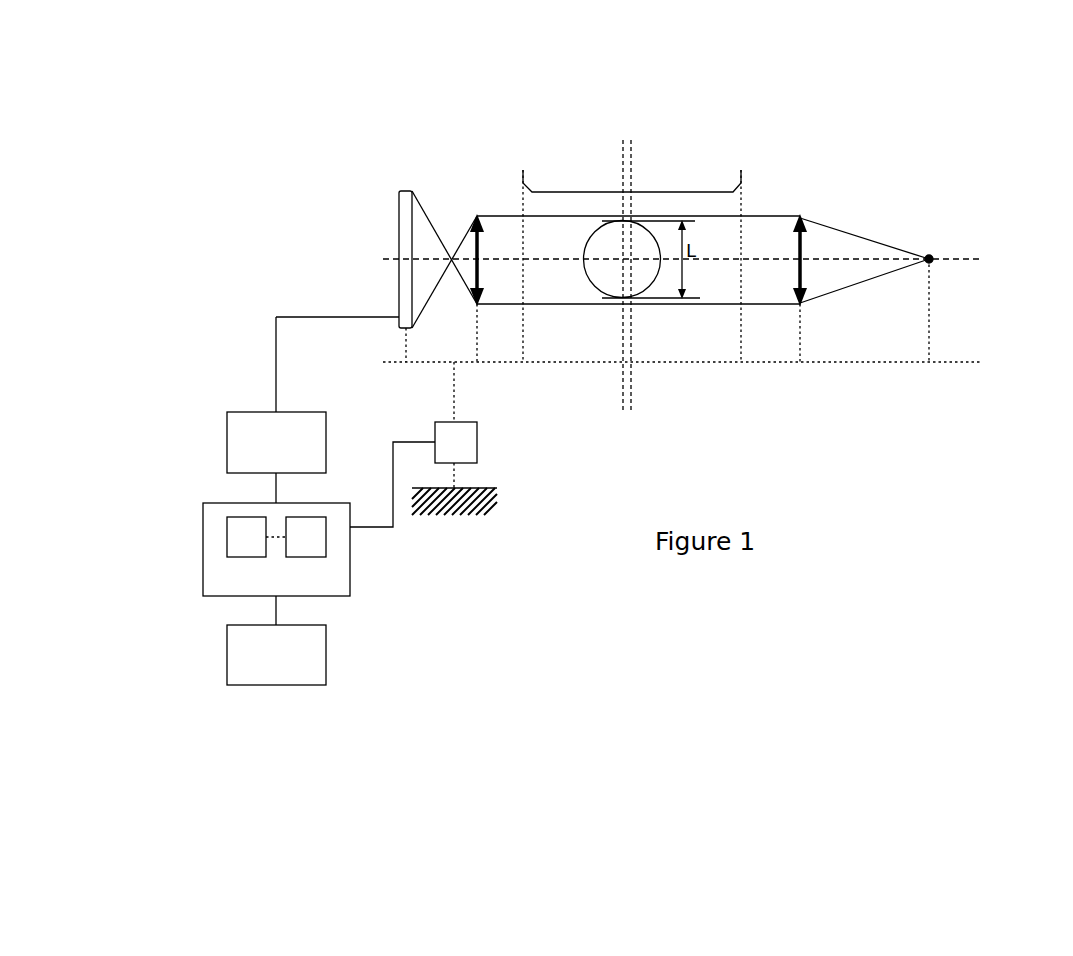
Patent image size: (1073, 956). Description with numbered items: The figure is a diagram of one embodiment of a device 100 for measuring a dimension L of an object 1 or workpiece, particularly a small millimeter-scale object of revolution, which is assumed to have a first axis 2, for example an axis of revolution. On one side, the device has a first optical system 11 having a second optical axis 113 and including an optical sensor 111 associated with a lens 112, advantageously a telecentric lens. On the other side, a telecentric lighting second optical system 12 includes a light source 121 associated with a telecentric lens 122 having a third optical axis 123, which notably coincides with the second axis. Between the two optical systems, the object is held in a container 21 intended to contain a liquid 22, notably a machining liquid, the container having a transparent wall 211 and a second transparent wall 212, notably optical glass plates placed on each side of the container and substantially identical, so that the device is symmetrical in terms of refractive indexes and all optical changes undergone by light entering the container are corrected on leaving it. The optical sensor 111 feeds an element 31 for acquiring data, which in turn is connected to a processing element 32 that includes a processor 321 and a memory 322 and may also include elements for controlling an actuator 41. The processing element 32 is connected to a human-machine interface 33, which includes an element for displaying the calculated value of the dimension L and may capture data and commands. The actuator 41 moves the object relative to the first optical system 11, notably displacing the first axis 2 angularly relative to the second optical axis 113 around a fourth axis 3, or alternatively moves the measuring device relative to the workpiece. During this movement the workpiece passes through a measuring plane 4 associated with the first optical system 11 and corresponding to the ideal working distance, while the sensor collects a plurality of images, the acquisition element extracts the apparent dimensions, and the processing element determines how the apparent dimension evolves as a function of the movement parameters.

The device 100 is at (818, 143).
The first optical system 11 is at (645, 225).
The optical sensor 111 is at (402, 206).
The lens 112 is at (475, 211).
The second optical axis 113 is at (390, 260).
The object 1 is at (646, 226).
The first axis 2 is at (620, 256).
The fourth axis 3 is at (621, 152).
The measuring plane 4 is at (632, 140).
The telecentric lighting second optical system 12 is at (919, 270).
The light source 121 is at (935, 255).
The telecentric lens 122 is at (808, 222).
The third optical axis 123 is at (962, 264).
The container 21 is at (641, 362).
The transparent wall 211 is at (523, 353).
The liquid 22 is at (685, 348).
The transparent wall 212 is at (742, 353).
The element for acquiring data 31 is at (240, 412).
The processing element 32 is at (285, 533).
The processor 321 is at (227, 535).
The memory 322 is at (326, 536).
The human-machine interface 33 is at (327, 653).
The actuator 41 is at (477, 443).